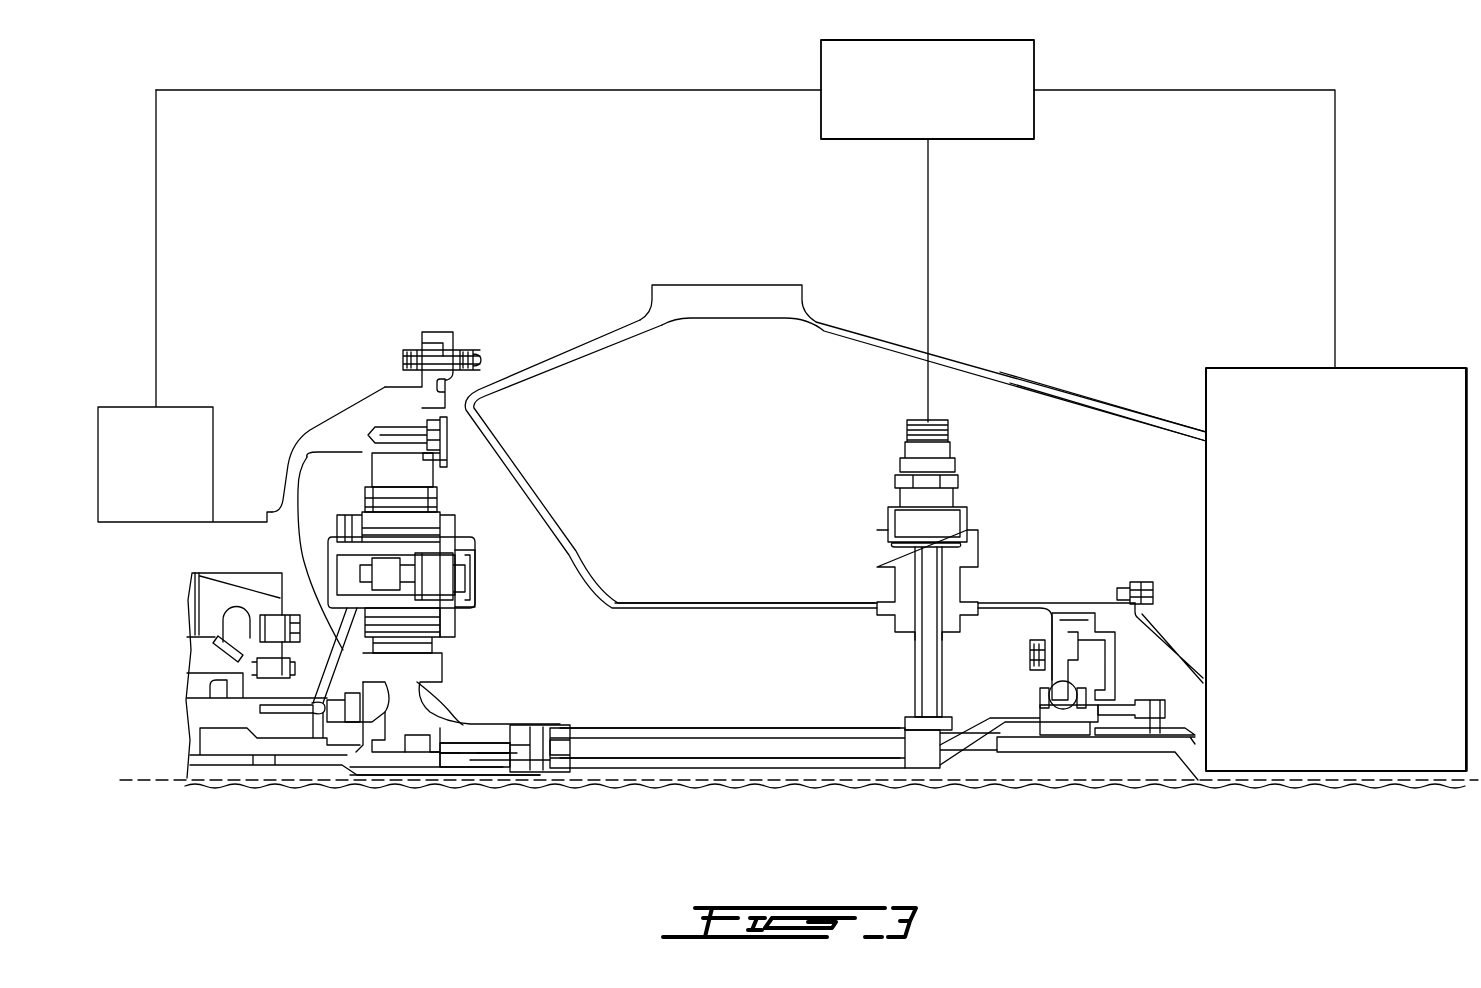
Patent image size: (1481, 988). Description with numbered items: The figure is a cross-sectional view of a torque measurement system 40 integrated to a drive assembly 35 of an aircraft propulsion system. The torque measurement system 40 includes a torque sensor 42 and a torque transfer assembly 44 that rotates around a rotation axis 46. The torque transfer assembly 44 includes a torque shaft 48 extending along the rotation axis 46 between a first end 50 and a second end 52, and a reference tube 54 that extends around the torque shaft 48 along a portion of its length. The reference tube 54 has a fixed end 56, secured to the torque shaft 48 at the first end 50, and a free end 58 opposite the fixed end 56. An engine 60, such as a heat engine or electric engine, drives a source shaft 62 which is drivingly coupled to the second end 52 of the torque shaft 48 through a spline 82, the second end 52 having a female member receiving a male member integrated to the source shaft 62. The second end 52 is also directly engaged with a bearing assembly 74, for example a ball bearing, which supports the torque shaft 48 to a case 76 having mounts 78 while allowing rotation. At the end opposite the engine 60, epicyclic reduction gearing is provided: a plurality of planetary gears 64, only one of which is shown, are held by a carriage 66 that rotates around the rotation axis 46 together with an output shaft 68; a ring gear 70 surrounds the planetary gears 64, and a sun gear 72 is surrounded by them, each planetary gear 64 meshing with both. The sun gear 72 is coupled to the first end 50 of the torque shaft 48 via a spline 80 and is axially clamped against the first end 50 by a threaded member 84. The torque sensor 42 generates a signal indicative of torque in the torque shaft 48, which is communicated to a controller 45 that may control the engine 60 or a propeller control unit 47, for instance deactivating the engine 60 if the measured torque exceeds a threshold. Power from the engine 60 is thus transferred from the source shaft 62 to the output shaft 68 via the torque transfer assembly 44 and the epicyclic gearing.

The drive assembly 35 is at (803, 795).
The torque measurement system 40 is at (832, 448).
The torque sensor 42 is at (925, 593).
The torque transfer assembly 44 is at (683, 728).
The controller 45 is at (1034, 62).
The rotation axis 46 is at (128, 778).
The propeller control unit 47 is at (190, 407).
The torque shaft 48 is at (727, 758).
The first end 50 is at (480, 768).
The second end 52 is at (1018, 738).
The reference tube 54 is at (597, 728).
The fixed end 56 is at (545, 727).
The free end 58 is at (880, 715).
The engine 60 is at (1399, 368).
The source shaft 62 is at (1152, 752).
The planetary gears 64 is at (393, 476).
The carriage 66 is at (323, 593).
The output shaft 68 is at (278, 725).
The ring gear 70 is at (410, 452).
The sun gear 72 is at (410, 662).
The bearing assembly 74 is at (1062, 680).
The case 76 is at (1103, 404).
The mounts 78 is at (732, 298).
The spline 80 is at (460, 755).
The spline 82 is at (1070, 752).
The threaded member 84 is at (421, 760).